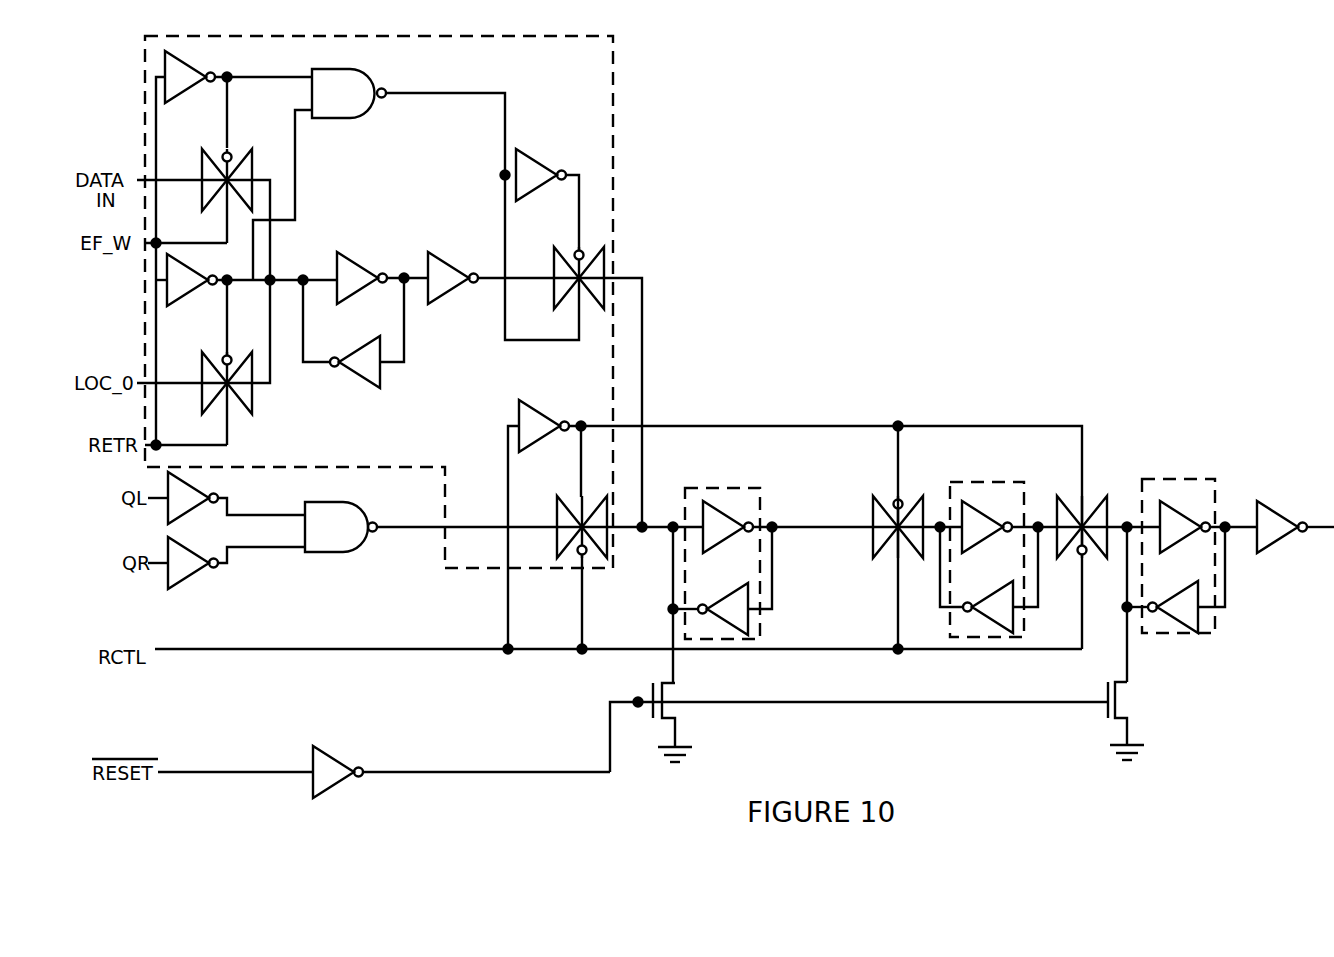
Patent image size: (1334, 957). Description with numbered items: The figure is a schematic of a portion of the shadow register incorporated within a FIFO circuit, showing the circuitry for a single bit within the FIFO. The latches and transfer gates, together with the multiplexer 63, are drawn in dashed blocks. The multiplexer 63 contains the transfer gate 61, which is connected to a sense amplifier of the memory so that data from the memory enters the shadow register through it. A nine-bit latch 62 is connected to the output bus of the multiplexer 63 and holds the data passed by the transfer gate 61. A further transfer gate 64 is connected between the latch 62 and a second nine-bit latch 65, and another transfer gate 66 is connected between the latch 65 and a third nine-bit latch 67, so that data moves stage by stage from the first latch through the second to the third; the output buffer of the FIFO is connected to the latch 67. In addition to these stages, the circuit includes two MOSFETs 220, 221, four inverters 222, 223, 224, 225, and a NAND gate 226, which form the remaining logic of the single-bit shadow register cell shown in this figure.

The transfer gate 61 is at (567, 498).
The nine-bit latch 62 is at (718, 488).
The multiplexer 63 is at (615, 70).
The transfer gate 64 is at (882, 499).
The second nine-bit latch 65 is at (978, 482).
The transfer gate 66 is at (1107, 490).
The third nine-bit latch 67 is at (1207, 479).
The MOSFET 220 is at (677, 731).
The MOSFET 221 is at (1130, 726).
The inverter 222 is at (183, 490).
The inverter 223 is at (188, 568).
The inverter 224 is at (327, 778).
The inverter 225 is at (1272, 515).
The NAND gate 226 is at (345, 540).